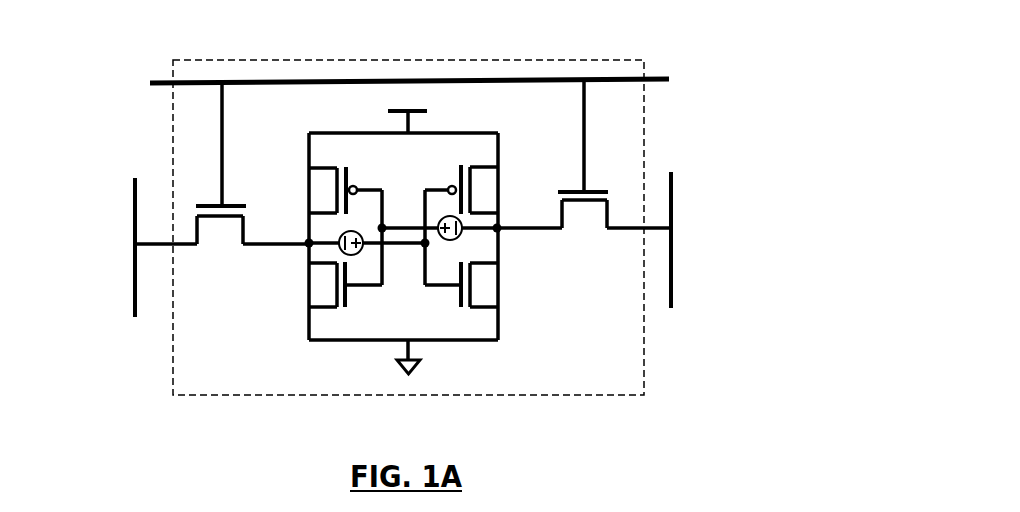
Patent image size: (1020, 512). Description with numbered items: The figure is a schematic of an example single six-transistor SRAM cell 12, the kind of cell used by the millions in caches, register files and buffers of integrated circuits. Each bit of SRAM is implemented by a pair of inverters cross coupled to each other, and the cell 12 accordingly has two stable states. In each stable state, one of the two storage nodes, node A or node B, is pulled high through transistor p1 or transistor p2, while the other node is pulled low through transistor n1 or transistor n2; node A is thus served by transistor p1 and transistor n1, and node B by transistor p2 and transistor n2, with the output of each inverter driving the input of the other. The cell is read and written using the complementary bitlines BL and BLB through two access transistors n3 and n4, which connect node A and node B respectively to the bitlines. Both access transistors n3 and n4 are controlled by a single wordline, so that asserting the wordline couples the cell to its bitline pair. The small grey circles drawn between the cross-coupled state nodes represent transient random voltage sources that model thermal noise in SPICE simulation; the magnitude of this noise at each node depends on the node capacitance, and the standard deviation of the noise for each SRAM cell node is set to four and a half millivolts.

The 6-transistor cell 12 is at (711, 48).
The transistor n1 is at (466, 284).
The transistor n2 is at (341, 284).
The access transistor n3 is at (584, 163).
The access transistor n4 is at (222, 168).
The transistor p1 is at (465, 189).
The transistor p2 is at (342, 190).
The node A is at (518, 215).
The node B is at (289, 230).